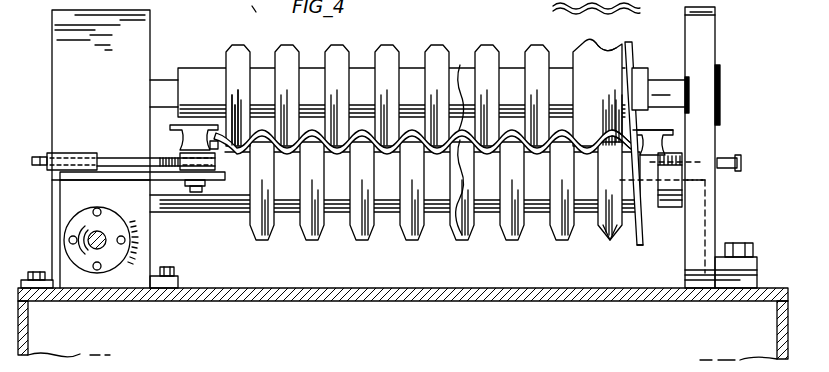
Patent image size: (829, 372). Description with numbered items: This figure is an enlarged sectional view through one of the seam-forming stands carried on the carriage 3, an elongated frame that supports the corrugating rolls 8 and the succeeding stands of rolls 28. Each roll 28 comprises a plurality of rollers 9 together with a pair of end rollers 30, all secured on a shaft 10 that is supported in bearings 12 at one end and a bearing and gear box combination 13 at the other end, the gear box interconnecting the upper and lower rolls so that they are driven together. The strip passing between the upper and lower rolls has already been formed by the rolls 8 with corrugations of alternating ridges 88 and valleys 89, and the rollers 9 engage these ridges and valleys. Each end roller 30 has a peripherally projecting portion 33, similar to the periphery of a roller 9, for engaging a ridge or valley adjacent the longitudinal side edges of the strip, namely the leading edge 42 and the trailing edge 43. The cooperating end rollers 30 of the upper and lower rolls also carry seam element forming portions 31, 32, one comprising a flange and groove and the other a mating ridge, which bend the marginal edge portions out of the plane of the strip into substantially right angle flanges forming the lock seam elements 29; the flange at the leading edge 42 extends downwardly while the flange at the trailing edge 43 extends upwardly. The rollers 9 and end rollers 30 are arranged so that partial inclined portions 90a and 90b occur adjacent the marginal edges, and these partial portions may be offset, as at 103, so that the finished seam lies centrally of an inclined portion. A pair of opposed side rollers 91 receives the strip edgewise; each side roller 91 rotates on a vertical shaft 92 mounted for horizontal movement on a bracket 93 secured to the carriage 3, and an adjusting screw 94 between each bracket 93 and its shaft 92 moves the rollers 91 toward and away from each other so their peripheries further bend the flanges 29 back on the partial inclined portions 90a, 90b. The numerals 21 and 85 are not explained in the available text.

The carriage 3 is at (38, 188).
The corrugating rolls 8 is at (415, 55).
The rollers 9 is at (483, 48).
The shaft 10 is at (165, 82).
The bearings 12 is at (705, 30).
The bearing and gear box combination 13 is at (112, 102).
The conveyor element 21 is at (250, 6).
The rolls 28 is at (515, 58).
The lock seam elements 29 is at (645, 141).
The end rollers 30 is at (585, 48).
The seam element forming portion 31 is at (636, 245).
The seam element forming portion 32 is at (628, 42).
The peripherally projecting portion 33 is at (595, 55).
The leading edge 42 is at (216, 150).
The trailing edge 43 is at (640, 105).
The corrugated belt section 85 is at (553, 6).
The ridges 88 is at (412, 132).
The valleys 89 is at (340, 165).
The partial inclined portion 90a is at (222, 138).
The partial inclined portion 90b is at (612, 152).
The side rollers 91 is at (178, 142).
The vertical shaft 92 is at (195, 192).
The bracket 93 is at (88, 176).
The adjusting screw 94 is at (115, 156).
The offset 103 is at (232, 148).